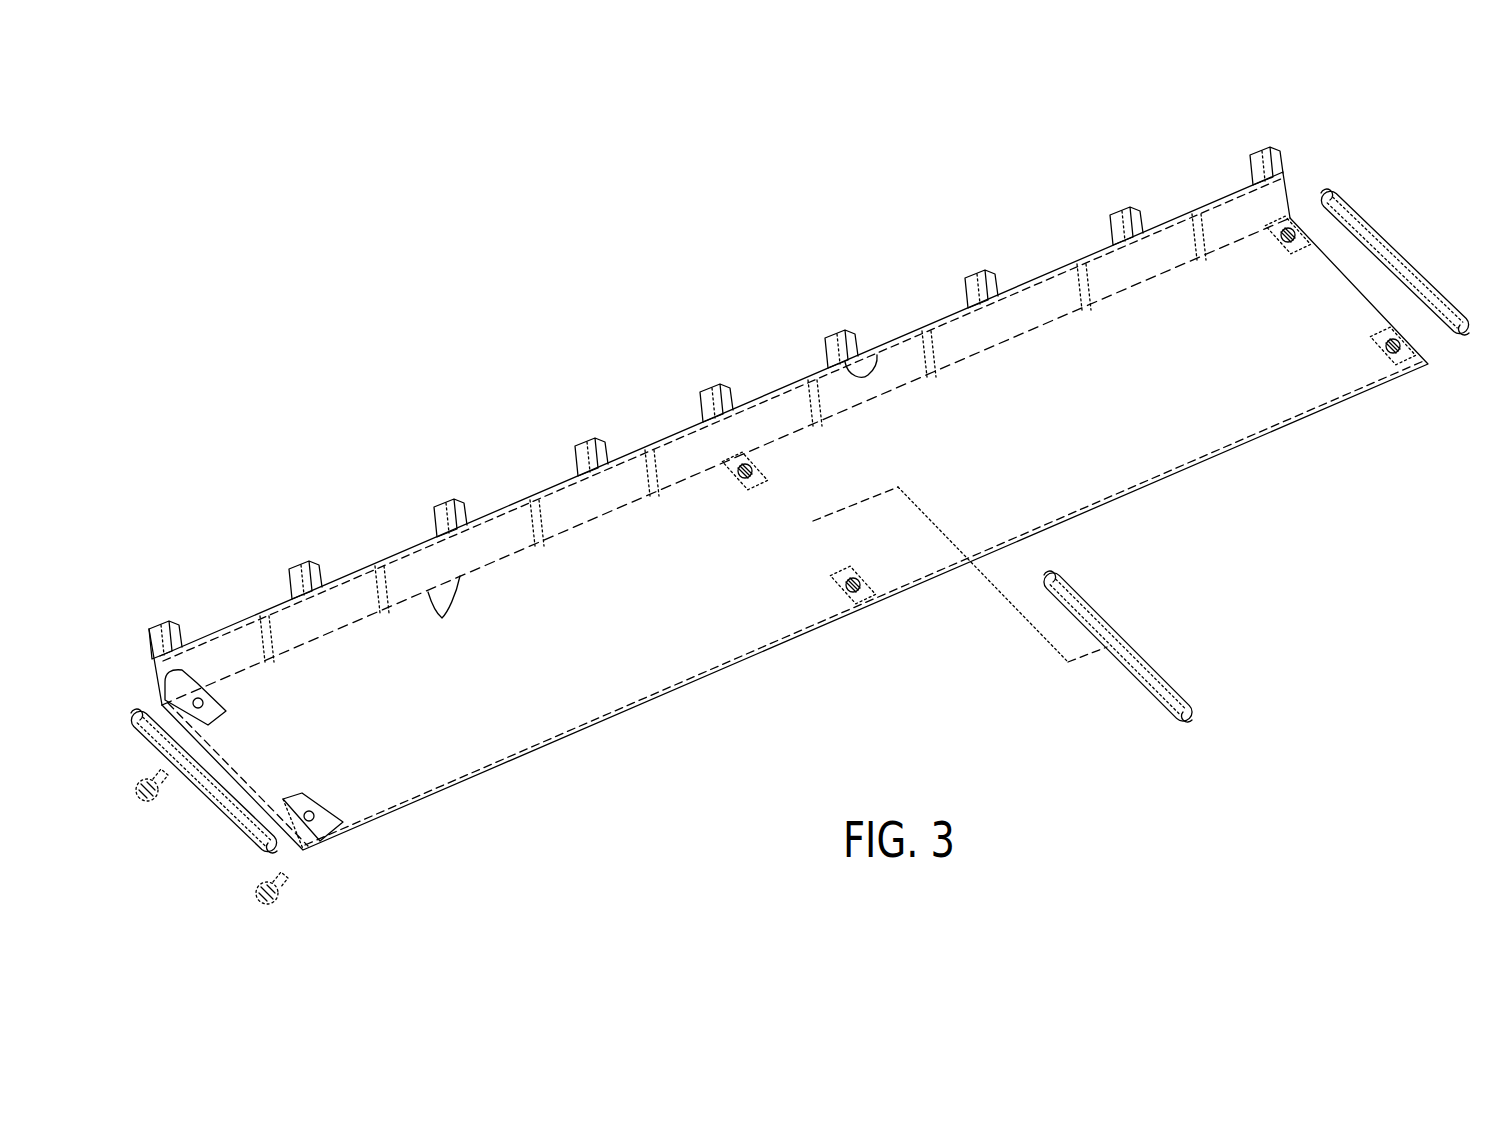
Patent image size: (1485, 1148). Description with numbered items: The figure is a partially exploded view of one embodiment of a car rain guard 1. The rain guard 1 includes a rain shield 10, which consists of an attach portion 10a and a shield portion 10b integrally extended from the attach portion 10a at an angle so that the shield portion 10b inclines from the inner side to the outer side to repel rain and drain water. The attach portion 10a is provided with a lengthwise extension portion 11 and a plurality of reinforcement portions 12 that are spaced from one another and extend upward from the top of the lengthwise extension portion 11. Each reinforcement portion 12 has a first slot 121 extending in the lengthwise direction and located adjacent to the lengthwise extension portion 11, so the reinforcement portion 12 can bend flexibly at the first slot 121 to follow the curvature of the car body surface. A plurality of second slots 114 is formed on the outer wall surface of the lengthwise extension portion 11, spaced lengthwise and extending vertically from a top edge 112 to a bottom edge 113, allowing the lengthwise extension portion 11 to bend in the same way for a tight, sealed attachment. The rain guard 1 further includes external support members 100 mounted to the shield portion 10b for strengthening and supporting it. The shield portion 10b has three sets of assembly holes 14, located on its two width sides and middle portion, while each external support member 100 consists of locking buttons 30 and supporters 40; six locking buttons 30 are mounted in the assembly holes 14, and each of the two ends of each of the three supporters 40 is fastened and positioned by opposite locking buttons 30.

The rain guard 1 is at (786, 502).
The rain shield 10 is at (786, 453).
The attach portion 10a is at (736, 408).
The shield portion 10b is at (1357, 287).
The lengthwise extension portion 11 is at (200, 632).
The reinforcement portion 12 is at (709, 403).
The assembly hole 14 is at (165, 672).
The locking button 30 is at (1284, 222).
The supporter 40 is at (1402, 262).
The external support member 100 is at (786, 502).
The top edge 112 is at (490, 513).
The bottom edge 113 is at (432, 597).
The second slot 114 is at (535, 527).
The first slot 121 is at (876, 356).